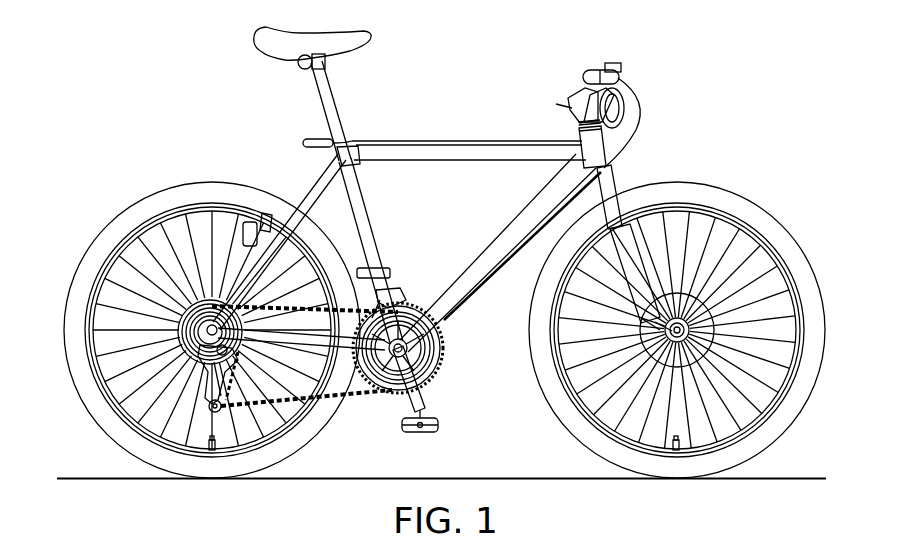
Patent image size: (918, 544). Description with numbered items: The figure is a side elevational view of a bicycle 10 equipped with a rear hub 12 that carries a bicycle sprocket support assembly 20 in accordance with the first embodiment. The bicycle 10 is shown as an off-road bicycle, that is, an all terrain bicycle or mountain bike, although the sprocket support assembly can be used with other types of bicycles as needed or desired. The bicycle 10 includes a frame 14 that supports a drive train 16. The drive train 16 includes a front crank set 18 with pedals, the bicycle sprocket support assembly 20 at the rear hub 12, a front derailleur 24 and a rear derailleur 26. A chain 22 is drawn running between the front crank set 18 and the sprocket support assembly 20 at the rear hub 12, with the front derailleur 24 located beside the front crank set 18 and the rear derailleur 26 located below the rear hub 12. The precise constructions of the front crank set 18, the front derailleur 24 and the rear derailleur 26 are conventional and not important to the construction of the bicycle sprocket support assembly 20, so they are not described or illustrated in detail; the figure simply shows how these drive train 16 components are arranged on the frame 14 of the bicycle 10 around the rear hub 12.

The bicycle 10 is at (678, 52).
The rear hub 12 is at (194, 284).
The frame 14 is at (437, 163).
The drive train 16 is at (446, 386).
The front crank set 18 is at (360, 380).
The bicycle sprocket support assembly 20 is at (172, 339).
The chain 22 is at (325, 408).
The front derailleur 24 is at (400, 291).
The rear derailleur 26 is at (204, 381).